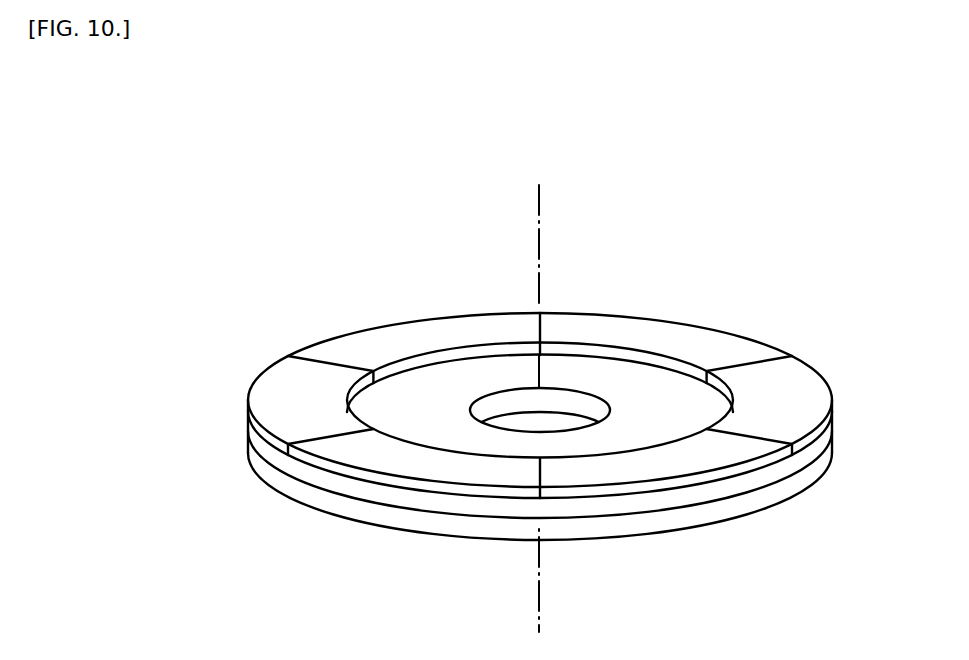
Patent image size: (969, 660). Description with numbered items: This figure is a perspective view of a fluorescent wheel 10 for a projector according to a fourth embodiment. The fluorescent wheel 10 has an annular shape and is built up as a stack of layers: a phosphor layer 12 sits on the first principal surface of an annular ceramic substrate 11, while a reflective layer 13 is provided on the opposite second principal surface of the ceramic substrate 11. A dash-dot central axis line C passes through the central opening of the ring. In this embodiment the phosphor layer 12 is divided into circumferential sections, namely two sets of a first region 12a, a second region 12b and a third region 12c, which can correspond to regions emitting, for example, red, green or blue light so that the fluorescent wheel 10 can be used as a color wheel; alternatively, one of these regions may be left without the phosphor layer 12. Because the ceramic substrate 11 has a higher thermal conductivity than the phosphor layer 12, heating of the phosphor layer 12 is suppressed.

The fluorescent wheel 10 is at (526, 345).
The ceramic substrate 11 is at (270, 450).
The phosphor layer 12 is at (526, 396).
The first region 12a is at (610, 322).
The second region 12b is at (278, 388).
The third region 12c is at (438, 328).
The reflective layer 13 is at (768, 505).
The central axis C is at (545, 212).